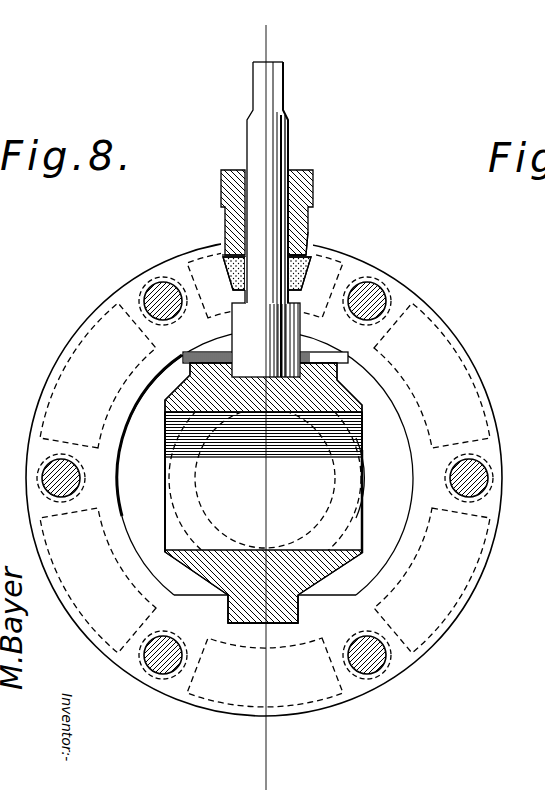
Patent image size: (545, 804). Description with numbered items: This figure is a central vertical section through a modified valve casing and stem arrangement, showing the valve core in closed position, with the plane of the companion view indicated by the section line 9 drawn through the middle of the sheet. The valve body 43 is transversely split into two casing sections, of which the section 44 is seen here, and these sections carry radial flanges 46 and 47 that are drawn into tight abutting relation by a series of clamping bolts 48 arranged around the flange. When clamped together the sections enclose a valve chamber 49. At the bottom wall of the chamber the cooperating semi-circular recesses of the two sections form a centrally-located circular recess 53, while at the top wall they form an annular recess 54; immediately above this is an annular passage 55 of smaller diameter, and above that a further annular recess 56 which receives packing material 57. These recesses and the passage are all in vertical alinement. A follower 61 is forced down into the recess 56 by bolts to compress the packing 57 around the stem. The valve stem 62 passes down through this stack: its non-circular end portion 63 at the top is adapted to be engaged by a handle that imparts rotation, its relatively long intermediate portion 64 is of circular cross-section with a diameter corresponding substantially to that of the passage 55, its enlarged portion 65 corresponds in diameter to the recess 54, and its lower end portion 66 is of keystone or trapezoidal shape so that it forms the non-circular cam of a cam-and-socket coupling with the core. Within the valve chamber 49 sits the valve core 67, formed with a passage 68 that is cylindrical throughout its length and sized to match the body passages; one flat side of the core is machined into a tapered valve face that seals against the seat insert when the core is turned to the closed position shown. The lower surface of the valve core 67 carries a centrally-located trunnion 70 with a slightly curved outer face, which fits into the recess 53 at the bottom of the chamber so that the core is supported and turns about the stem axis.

The section line 9— 9 is at (284, 38).
The valve body 43 is at (462, 348).
The valve body section 44 is at (307, 252).
The radial flange 46 is at (486, 474).
The radial flange 47 is at (422, 600).
The clamping bolts 48 is at (380, 297).
The valve chamber 49 is at (400, 445).
The circular recess 53 is at (300, 607).
The annular recess 54 is at (215, 292).
The annular passage 55 is at (238, 292).
The annular recess 56 is at (306, 272).
The packing material 57 is at (308, 252).
The follower 61 is at (305, 186).
The valve stem 62 is at (288, 123).
The non-circular end portion 63 is at (283, 97).
The intermediate portion 64 is at (275, 167).
The enlarged portion 65 is at (240, 337).
The lower end portion 66 is at (182, 363).
The valve core 67 is at (362, 580).
The passage 68 is at (262, 479).
The trunnion 70 is at (285, 623).